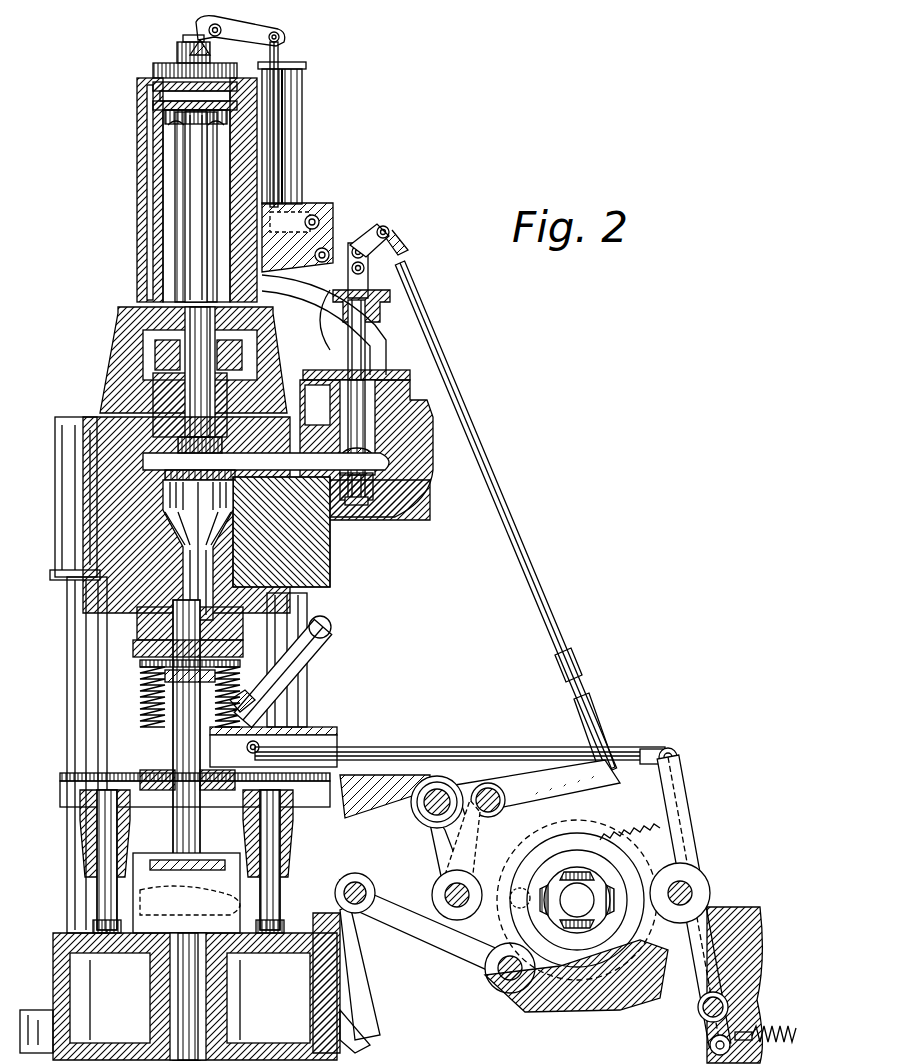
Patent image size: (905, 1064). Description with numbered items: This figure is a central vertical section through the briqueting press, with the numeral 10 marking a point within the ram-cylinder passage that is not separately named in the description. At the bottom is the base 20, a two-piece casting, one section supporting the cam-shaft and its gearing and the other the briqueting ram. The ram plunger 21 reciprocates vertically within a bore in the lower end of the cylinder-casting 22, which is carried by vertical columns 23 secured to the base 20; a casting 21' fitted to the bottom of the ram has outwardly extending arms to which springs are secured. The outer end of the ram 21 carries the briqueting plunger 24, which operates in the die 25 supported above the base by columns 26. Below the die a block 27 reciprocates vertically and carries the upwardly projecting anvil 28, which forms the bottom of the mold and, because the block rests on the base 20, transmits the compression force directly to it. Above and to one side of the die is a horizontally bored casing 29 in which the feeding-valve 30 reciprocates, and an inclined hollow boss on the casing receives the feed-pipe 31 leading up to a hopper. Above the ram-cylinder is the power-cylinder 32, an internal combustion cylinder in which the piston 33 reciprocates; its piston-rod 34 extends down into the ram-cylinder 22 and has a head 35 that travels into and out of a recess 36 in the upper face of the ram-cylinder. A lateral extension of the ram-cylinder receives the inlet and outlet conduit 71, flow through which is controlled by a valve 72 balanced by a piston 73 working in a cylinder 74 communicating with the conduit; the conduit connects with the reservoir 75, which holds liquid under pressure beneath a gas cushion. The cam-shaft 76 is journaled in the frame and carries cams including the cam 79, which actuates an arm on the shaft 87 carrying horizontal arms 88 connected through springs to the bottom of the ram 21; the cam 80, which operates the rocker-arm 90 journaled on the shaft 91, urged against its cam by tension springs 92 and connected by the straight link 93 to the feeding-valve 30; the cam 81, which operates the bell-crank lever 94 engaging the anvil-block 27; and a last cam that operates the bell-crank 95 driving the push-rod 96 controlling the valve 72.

The oil passage 10 is at (248, 464).
The base 20 is at (70, 1010).
The ram plunger 21 is at (198, 550).
The casting 21' is at (201, 645).
The cylinder-casting 22 is at (62, 524).
The vertical columns 23 is at (75, 656).
The briqueting plunger 24 is at (150, 700).
The die 25 is at (165, 770).
The columns 26 is at (85, 845).
The block 27 is at (158, 880).
The anvil 28 is at (250, 835).
The casing 29 is at (320, 727).
The feeding-valve 30 is at (273, 751).
The feed-pipe 31 is at (318, 650).
The power-cylinder 32 is at (150, 207).
The piston 33 is at (147, 131).
The piston-rod 34 is at (198, 345).
The head 35 is at (198, 455).
The recess 36 is at (185, 455).
The inlet and outlet conduit 71 is at (375, 362).
The valve 72 is at (378, 460).
The piston 73 is at (380, 292).
The cylinder 74 is at (395, 318).
The reservoir 75 is at (298, 125).
The cam-shaft 76 is at (585, 887).
The cam 79 is at (560, 985).
The cam 80 is at (655, 752).
The cam 81 is at (620, 985).
The shaft 87 is at (436, 790).
The arms 88 is at (370, 800).
The rocker-arm 90 is at (725, 950).
The shaft 91 is at (700, 1012).
The tension springs 92 is at (775, 1020).
The link 93 is at (490, 747).
The bell-crank lever 94 is at (435, 960).
The bell-crank 95 is at (522, 790).
The push-rod 96 is at (520, 524).